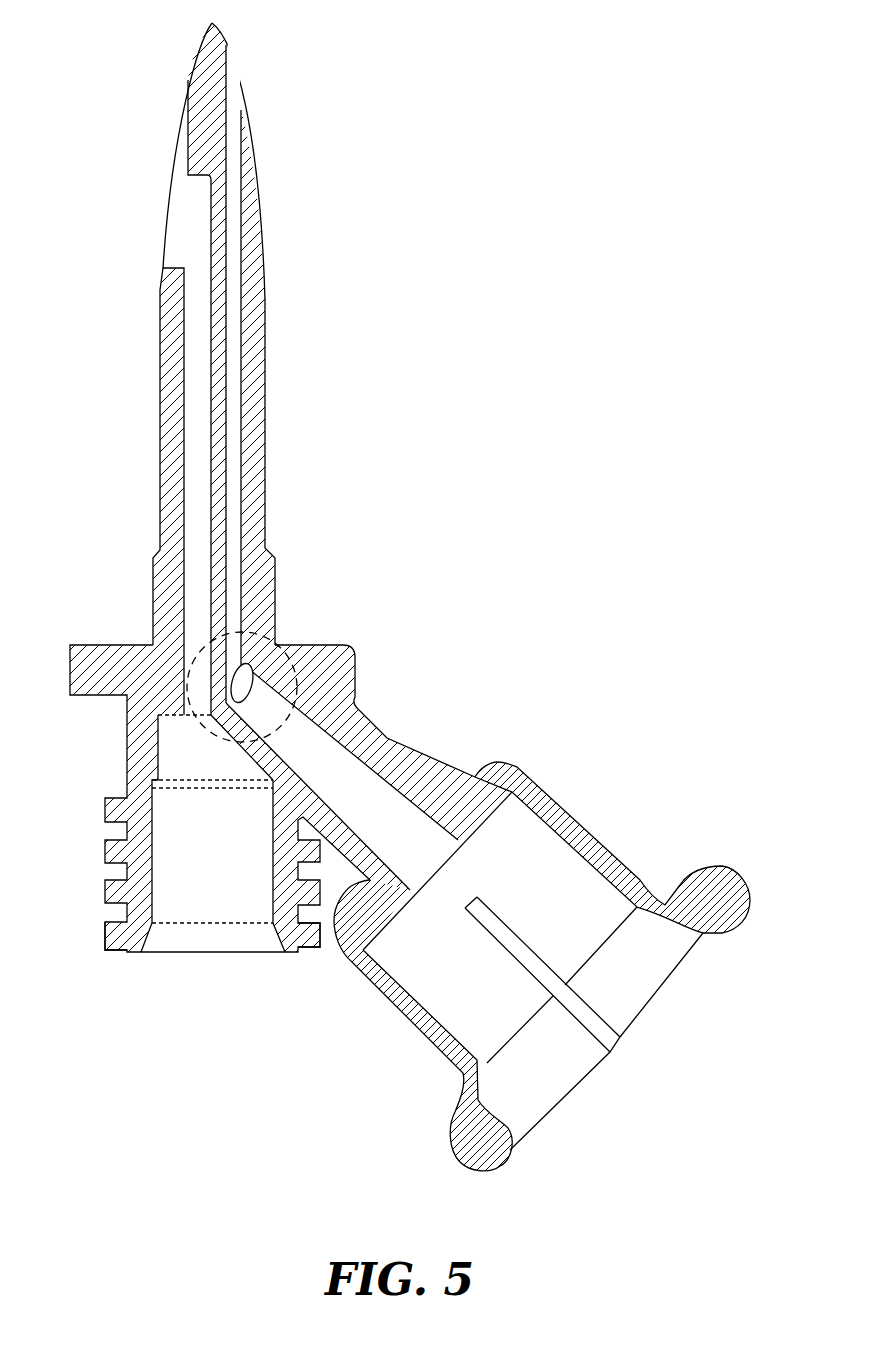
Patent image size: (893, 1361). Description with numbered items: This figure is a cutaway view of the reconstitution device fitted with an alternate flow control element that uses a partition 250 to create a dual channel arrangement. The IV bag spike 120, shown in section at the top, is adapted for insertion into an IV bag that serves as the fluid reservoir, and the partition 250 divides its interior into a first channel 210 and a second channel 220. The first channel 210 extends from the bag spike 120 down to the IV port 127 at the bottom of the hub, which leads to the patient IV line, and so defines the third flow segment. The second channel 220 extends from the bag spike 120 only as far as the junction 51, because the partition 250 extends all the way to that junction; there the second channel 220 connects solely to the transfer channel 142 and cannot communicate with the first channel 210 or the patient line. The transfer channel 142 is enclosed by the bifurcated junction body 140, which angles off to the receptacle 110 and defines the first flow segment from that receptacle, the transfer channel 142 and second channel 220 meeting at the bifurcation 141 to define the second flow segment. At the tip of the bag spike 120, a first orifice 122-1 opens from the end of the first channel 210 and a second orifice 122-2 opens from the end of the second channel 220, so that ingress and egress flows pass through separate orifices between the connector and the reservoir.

The IV bag spike 120 is at (318, 228).
The first orifice 122-1 is at (178, 118).
The second orifice 122-2 is at (232, 73).
The first channel 210 is at (195, 350).
The second channel 220 is at (235, 348).
The partition 250 is at (215, 430).
The bifurcated junction body 140 is at (433, 755).
The bifurcation 141 is at (192, 647).
The junction 51 is at (240, 688).
The transfer channel 142 is at (333, 768).
The IV port 127 is at (150, 955).
The receptacle 110 is at (590, 830).